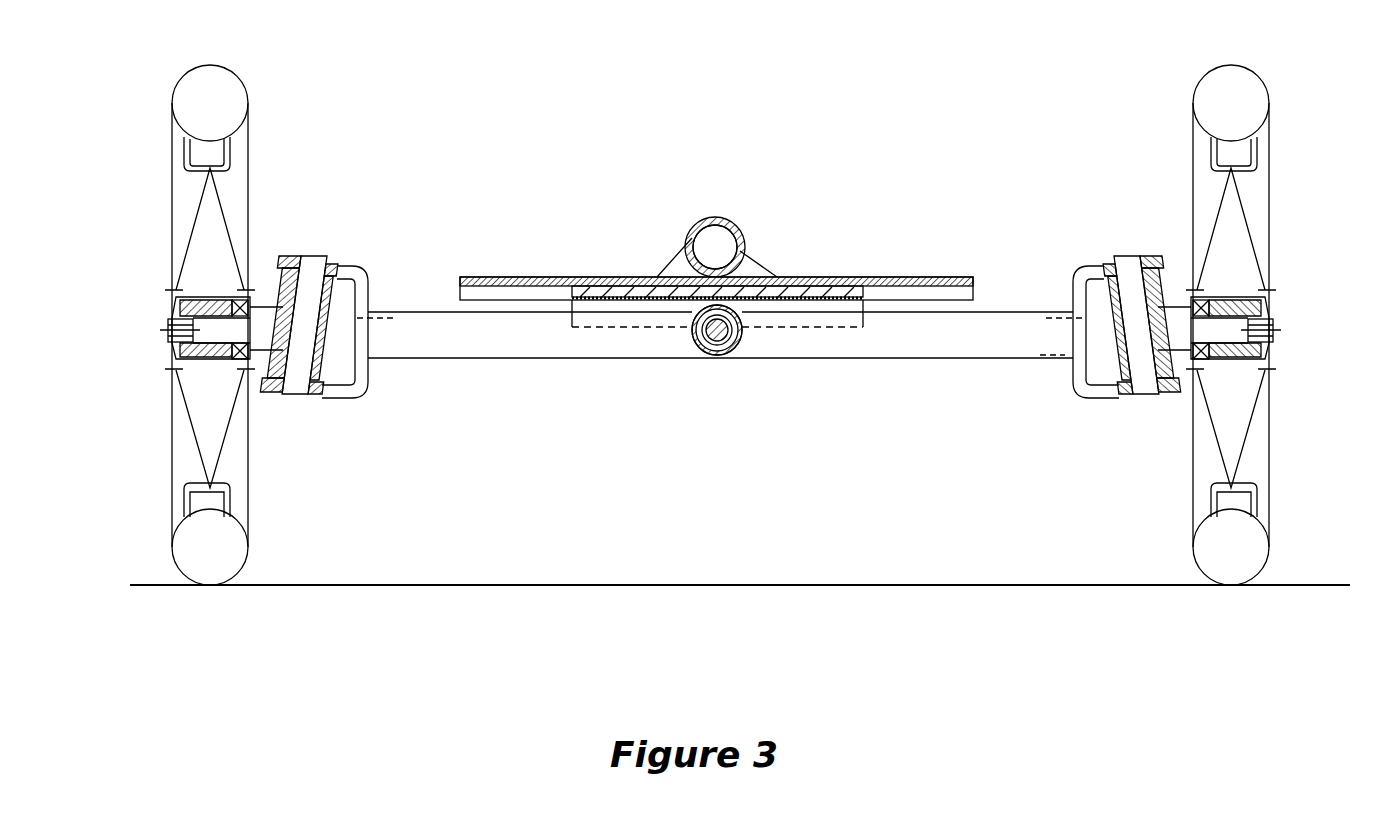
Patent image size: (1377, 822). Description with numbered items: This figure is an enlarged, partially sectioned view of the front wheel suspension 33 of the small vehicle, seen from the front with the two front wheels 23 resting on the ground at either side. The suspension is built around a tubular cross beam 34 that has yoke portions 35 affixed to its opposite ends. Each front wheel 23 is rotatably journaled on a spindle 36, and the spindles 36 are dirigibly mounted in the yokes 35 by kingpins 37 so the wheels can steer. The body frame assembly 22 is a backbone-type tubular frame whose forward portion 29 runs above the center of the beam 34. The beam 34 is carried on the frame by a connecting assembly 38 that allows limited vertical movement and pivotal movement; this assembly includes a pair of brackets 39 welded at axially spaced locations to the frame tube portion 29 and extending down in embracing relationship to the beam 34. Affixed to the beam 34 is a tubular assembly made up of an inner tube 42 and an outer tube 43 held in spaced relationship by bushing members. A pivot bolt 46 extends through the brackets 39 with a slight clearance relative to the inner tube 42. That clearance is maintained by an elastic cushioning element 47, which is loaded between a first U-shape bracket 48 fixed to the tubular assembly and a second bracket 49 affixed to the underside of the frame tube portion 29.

The body frame assembly 22 is at (685, 214).
The front wheels 23 is at (247, 90).
The forward portion 29 is at (735, 228).
The front wheel suspension 33 is at (619, 251).
The tubular cross beam 34 is at (455, 370).
The yoke portions 35 is at (357, 268).
The spindles 36 is at (163, 328).
The kingpins 37 is at (312, 266).
The connecting assembly 38 is at (672, 351).
The brackets 39 is at (773, 268).
The inner tube 42 is at (703, 357).
The outer tube 43 is at (750, 347).
The pivot bolt 46 is at (730, 357).
The elastic cushioning element 47 is at (838, 278).
The first U-shape bracket 48 is at (845, 300).
The second bracket 49 is at (955, 277).